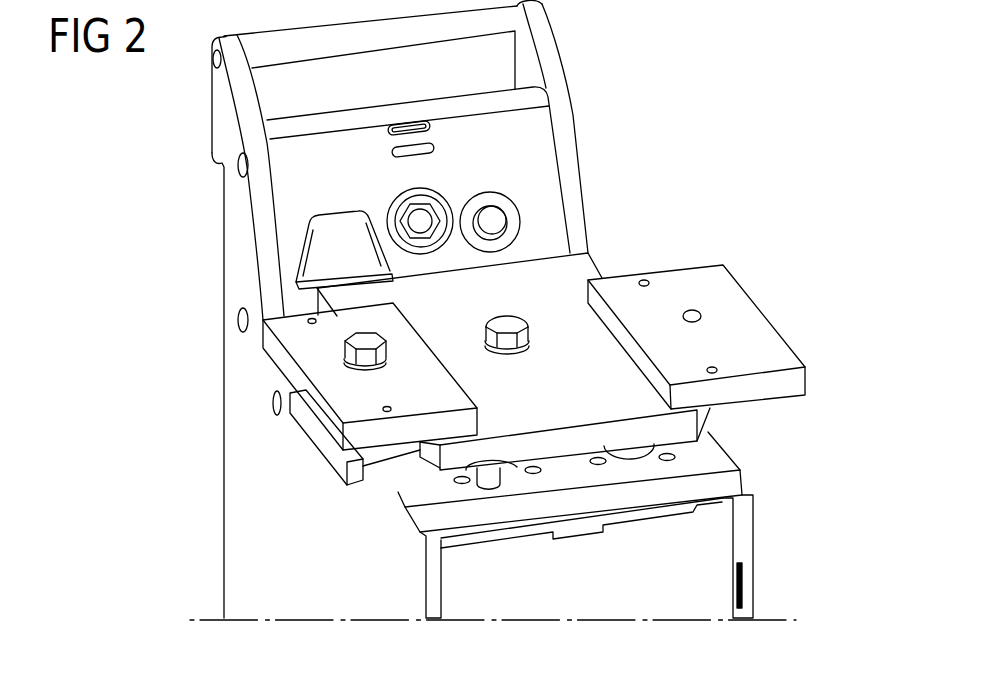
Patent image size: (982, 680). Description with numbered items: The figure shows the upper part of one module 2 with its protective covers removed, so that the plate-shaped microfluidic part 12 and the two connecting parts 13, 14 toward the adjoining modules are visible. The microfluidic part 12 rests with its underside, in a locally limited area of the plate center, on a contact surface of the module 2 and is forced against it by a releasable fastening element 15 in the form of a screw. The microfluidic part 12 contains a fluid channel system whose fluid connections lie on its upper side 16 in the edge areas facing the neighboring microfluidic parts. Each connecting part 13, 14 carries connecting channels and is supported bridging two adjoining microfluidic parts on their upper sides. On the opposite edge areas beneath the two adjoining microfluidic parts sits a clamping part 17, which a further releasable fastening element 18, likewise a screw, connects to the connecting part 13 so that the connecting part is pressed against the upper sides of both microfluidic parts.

The module 2 is at (678, 574).
The microfluidic part 12 is at (608, 361).
The upper side 16 is at (596, 382).
The connecting part 13 is at (322, 366).
The connecting part 14 is at (690, 285).
The releasable fastening element 15 is at (508, 316).
The clamping part 17 is at (361, 482).
The further releasable fastening element 18 is at (365, 335).